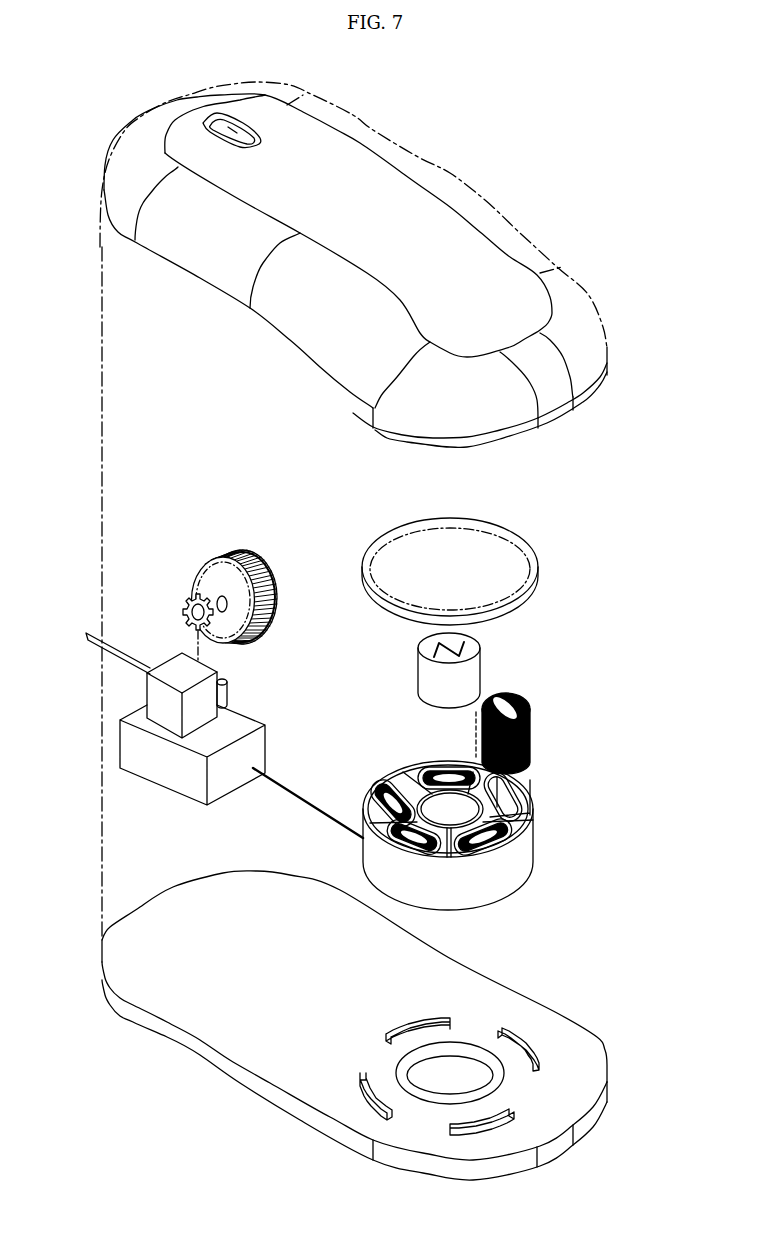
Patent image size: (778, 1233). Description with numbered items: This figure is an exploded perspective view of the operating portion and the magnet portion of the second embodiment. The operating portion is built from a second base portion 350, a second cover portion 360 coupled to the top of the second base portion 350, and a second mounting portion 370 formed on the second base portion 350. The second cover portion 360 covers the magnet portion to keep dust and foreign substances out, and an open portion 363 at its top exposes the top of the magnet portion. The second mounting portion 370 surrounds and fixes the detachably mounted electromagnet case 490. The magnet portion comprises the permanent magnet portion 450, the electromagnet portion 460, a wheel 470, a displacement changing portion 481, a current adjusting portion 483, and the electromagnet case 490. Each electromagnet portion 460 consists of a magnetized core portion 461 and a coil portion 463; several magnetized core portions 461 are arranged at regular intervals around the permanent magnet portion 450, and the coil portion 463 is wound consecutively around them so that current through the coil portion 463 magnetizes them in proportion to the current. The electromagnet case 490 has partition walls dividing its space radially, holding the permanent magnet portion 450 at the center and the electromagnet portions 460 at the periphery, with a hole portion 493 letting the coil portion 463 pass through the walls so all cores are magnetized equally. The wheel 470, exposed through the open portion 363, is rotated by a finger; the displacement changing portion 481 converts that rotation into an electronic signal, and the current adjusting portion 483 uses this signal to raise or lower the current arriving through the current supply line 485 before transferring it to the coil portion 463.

The second base portion 350 is at (167, 1005).
The second cover portion 360 is at (400, 218).
The open portion 363 is at (233, 132).
The second mounting portion 370 is at (535, 1042).
The permanent magnet portion 450 is at (473, 672).
The electromagnet portion 460 is at (595, 733).
The magnetized core portion 461 is at (530, 710).
The coil portion 463 is at (527, 765).
The wheel 470 is at (205, 573).
The displacement changing portion 481 is at (147, 703).
The current adjusting portion 483 is at (137, 745).
The current supply line 485 is at (117, 655).
The electromagnet case 490 is at (482, 714).
The hole portion 493 is at (533, 805).